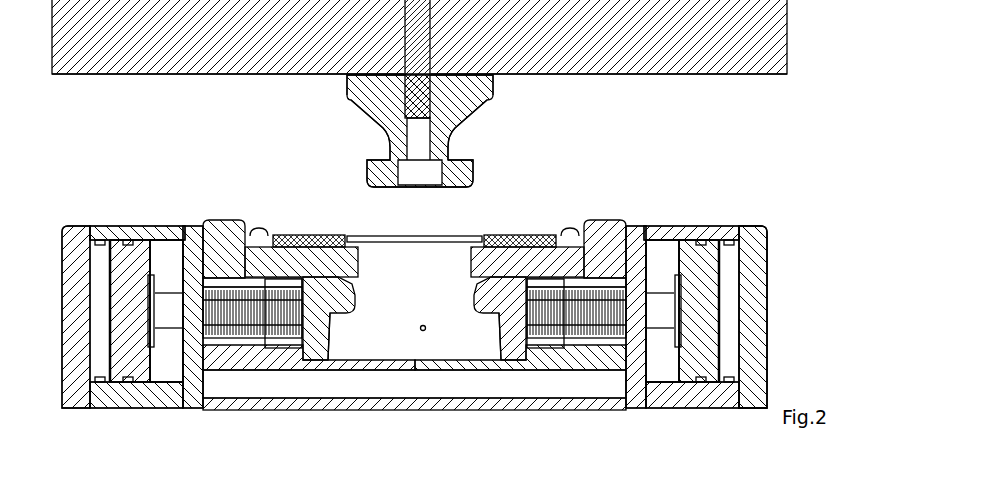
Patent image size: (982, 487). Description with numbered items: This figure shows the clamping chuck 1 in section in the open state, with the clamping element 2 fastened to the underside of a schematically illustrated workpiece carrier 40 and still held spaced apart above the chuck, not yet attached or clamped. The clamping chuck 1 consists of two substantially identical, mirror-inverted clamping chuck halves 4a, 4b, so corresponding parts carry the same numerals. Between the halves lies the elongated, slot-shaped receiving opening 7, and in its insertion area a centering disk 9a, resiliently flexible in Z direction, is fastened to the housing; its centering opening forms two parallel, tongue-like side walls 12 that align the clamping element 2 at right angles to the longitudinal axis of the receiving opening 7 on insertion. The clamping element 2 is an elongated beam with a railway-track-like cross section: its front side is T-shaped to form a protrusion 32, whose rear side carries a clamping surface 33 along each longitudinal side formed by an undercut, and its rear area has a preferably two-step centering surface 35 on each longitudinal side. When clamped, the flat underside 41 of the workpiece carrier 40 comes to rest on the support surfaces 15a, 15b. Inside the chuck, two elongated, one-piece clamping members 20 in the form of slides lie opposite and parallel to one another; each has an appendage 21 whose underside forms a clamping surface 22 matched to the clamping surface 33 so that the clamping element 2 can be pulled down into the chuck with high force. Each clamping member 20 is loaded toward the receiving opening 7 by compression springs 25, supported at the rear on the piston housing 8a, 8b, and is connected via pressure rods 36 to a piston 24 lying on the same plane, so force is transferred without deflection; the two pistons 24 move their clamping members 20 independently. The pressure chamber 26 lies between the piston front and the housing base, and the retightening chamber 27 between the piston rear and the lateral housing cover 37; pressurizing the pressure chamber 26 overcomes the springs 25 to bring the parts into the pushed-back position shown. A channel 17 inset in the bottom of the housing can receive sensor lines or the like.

The clamping chuck 1 is at (798, 262).
The clamping element 2 is at (483, 172).
The clamping chuck half 4a is at (733, 216).
The clamping chuck half 4b is at (125, 217).
The receiving opening 7 is at (423, 331).
The piston housing 8a is at (692, 237).
The piston housing 8b is at (138, 237).
The centering disk 9a is at (497, 235).
The side walls 12 is at (358, 236).
The support surface 15a is at (635, 229).
The support surface 15b is at (195, 229).
The channel 17 is at (365, 385).
The clamping member 20 is at (318, 335).
The appendage 21 is at (356, 298).
The clamping surface 22 is at (414, 336).
The piston 24 is at (130, 395).
The compression spring 25 is at (287, 340).
The pressure chamber 26 is at (178, 385).
The retightening chamber 27 is at (108, 395).
The protrusion 32 is at (367, 174).
The clamping surface 33 is at (414, 130).
The centering surface 35 is at (343, 88).
The pressure rods 36 is at (165, 385).
The lateral housing cover 37 is at (74, 400).
The workpiece carrier 40 is at (720, 68).
The flat underside 41 is at (419, 92).